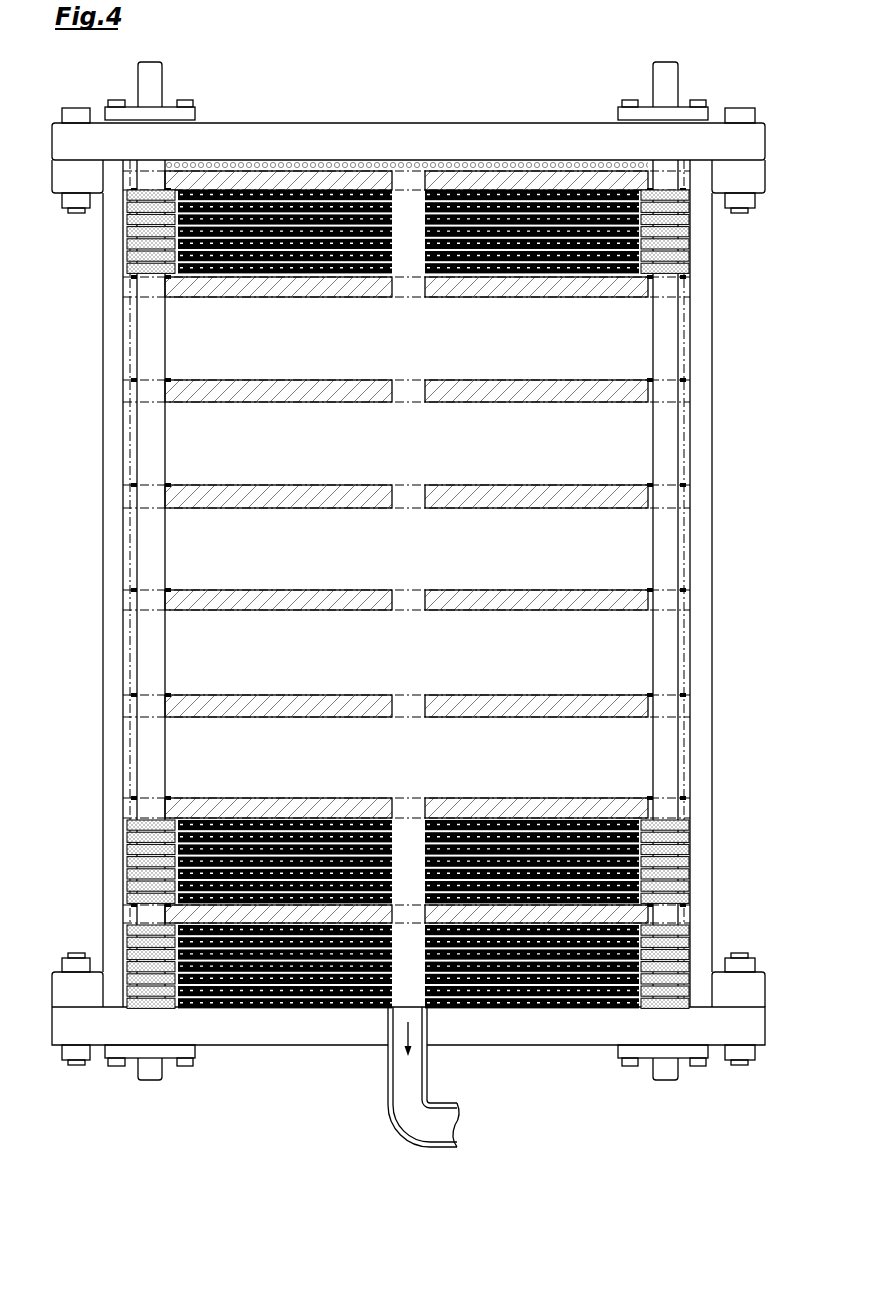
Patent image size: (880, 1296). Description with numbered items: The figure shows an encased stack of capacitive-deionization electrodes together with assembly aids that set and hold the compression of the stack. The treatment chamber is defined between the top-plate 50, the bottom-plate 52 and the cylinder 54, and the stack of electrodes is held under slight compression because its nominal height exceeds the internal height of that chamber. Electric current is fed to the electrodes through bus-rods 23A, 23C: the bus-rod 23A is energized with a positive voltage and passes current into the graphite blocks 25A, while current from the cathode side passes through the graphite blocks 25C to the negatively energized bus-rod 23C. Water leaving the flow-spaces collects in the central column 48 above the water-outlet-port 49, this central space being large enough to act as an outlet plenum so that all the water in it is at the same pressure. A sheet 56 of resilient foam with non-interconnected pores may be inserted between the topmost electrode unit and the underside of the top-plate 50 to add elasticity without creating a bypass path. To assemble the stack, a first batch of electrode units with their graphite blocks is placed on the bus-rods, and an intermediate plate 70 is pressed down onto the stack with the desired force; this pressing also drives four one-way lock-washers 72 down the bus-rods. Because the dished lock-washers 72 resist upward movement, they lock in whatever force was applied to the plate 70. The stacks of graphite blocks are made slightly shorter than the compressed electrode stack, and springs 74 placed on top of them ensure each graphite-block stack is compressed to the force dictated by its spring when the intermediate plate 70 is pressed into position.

The bus-rod 23A is at (157, 82).
The bus-rod 23C is at (660, 82).
The graphite blocks 25A is at (127, 900).
The graphite blocks 25C is at (690, 830).
The column of water 48 is at (410, 203).
The water-outlet-port 49 is at (405, 1090).
The top-plate 50 is at (302, 138).
The bottom-plate 52 is at (285, 1037).
The cylinder 54 is at (110, 433).
The sheet 56 is at (527, 167).
The intermediate plate 70 is at (193, 805).
The one-way lock-washers 72 is at (137, 697).
The springs 74 is at (127, 925).